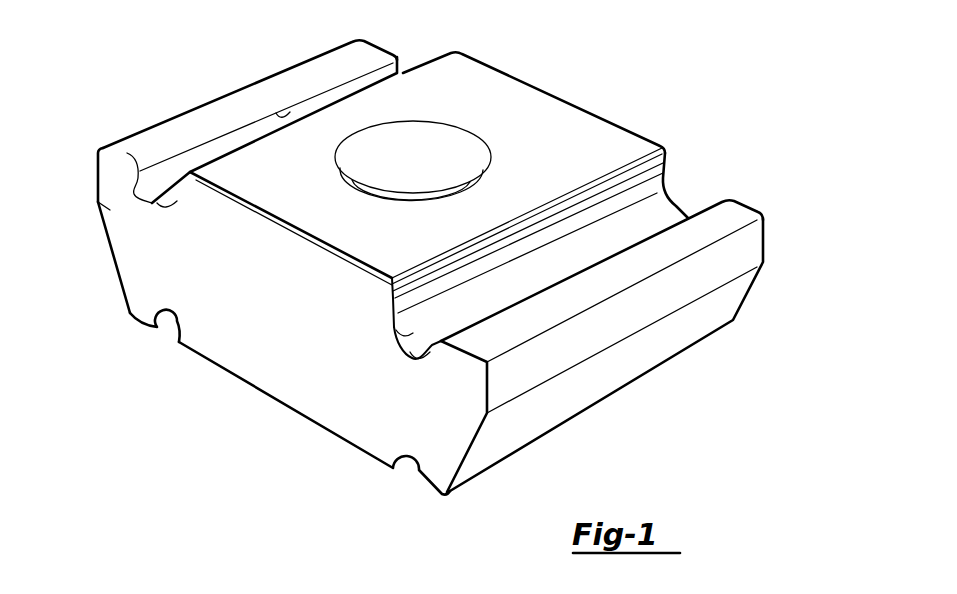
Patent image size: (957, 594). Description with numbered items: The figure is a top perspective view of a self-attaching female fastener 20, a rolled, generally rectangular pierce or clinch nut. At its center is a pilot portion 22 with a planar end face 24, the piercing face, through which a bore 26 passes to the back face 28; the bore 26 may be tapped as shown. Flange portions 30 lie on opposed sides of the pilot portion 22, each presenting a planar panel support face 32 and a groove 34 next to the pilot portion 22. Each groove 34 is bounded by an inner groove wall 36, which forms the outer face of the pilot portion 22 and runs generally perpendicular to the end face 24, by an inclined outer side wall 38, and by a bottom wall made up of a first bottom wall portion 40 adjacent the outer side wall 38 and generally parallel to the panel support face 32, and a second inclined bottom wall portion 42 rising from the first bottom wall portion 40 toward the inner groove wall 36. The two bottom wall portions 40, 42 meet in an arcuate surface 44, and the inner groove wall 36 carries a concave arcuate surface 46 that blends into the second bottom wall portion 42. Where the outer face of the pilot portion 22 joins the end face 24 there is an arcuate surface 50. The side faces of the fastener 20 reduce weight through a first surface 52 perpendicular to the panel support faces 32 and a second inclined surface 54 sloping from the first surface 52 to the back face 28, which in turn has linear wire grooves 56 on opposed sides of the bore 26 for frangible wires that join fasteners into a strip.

The self-attaching female fastener 20 is at (582, 80).
The central pilot portion 22 is at (492, 68).
The planar end face 24 is at (607, 132).
The bore 26 is at (388, 181).
The back face 28 is at (293, 410).
The flange portions 30 is at (117, 176).
The planar panel support face 32 is at (165, 132).
The groove 34 is at (697, 188).
The inner groove wall 36 is at (450, 282).
The inclined outer side wall 38 is at (285, 118).
The first bottom wall portion 40 is at (147, 198).
The second inclined bottom wall portion 42 is at (165, 206).
The arcuate surface 44 is at (413, 360).
The concave arcuate surface 46 is at (400, 314).
The arcuate surface 50 is at (667, 148).
The first surface 52 is at (632, 363).
The second inclined surface 54 is at (728, 262).
The linear wire grooves 56 is at (165, 340).